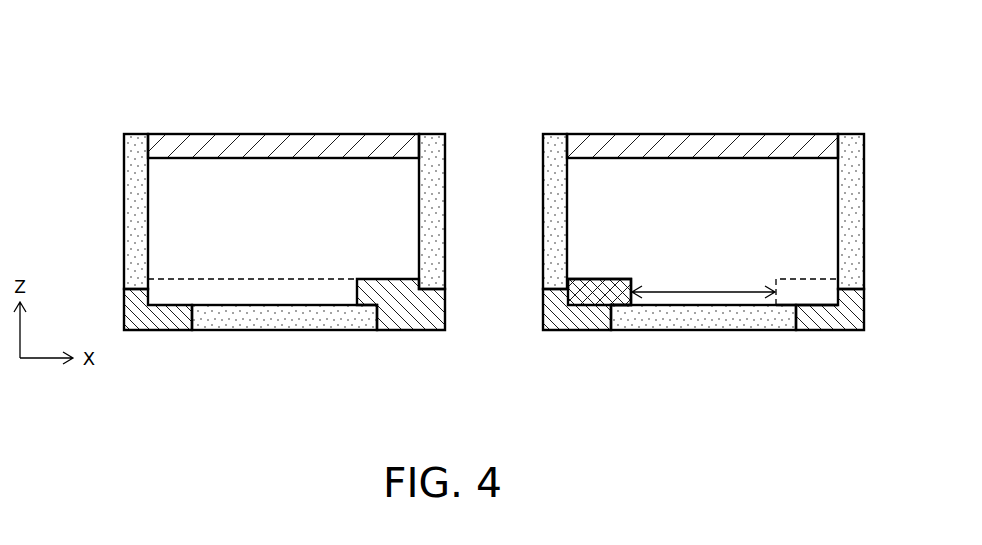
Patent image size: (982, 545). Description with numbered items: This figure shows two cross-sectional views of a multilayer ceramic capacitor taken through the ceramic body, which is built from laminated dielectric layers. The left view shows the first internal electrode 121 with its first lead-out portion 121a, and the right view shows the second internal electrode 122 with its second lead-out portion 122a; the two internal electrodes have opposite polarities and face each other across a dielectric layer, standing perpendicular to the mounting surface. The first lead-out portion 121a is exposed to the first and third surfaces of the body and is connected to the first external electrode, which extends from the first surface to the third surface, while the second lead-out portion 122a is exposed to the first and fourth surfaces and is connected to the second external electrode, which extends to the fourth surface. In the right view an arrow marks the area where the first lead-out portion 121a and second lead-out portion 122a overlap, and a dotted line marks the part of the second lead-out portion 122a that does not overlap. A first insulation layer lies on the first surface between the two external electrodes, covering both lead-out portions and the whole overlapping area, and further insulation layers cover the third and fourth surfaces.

The first internal electrode 121 is at (253, 170).
The first lead-out portion 121a is at (310, 298).
The second internal electrode 122 is at (663, 177).
The second lead-out portion 122a is at (743, 298).